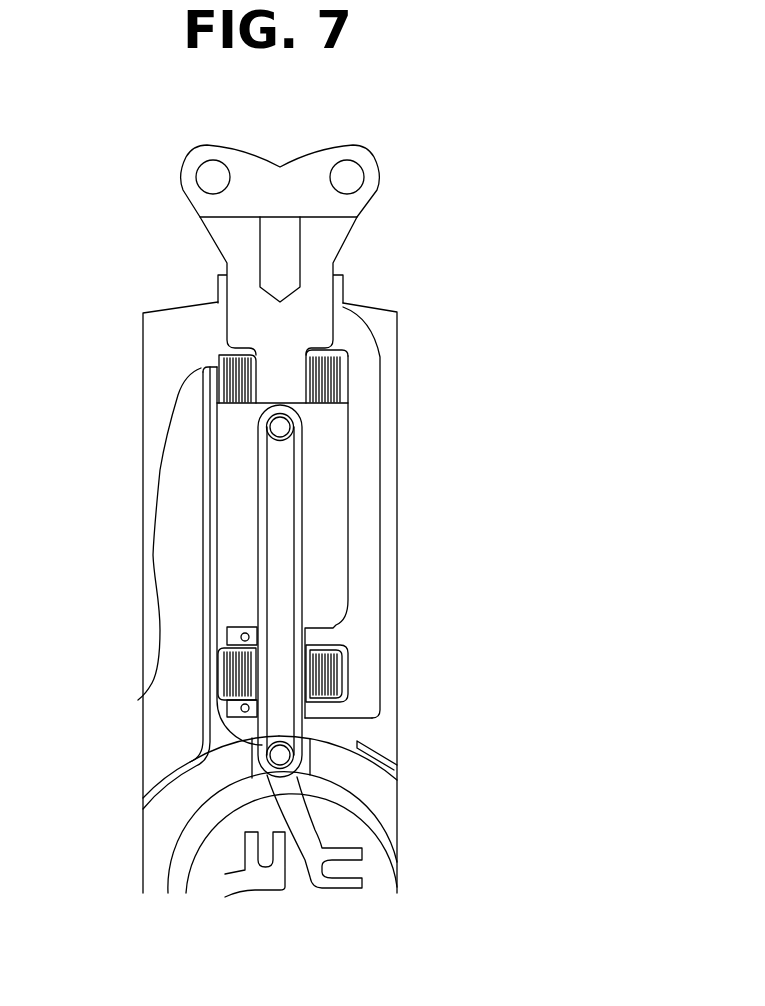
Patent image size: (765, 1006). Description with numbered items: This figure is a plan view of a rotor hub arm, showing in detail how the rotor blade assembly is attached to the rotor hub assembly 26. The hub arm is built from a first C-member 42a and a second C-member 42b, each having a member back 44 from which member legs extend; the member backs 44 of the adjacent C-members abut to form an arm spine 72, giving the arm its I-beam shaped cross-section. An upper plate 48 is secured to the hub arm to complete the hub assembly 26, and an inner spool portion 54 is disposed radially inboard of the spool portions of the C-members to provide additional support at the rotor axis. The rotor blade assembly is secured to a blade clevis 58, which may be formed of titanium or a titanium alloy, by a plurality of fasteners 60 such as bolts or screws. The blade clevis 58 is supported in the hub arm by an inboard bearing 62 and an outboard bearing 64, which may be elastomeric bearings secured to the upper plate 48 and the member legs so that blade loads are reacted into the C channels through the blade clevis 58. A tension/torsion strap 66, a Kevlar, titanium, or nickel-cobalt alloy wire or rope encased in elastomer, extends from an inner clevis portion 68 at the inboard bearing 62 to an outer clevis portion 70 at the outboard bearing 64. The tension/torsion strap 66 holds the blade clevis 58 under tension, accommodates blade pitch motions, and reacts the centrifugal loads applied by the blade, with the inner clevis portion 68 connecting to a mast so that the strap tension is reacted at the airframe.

The hub assembly 26 is at (512, 403).
The first C-member 42a is at (217, 673).
The second C-member 42b is at (204, 745).
The member back 44 is at (207, 433).
The upper plate 48 is at (167, 613).
The inner spool portion 54 is at (165, 821).
The blade clevis 58 is at (237, 263).
The fasteners 60 is at (211, 171).
The inboard bearing 62 is at (337, 674).
The outboard bearing 64 is at (218, 356).
The tension/torsion strap 66 is at (300, 552).
The inner clevis portion 68 is at (364, 721).
The outer clevis portion 70 is at (332, 345).
The arm spine 72 is at (212, 518).